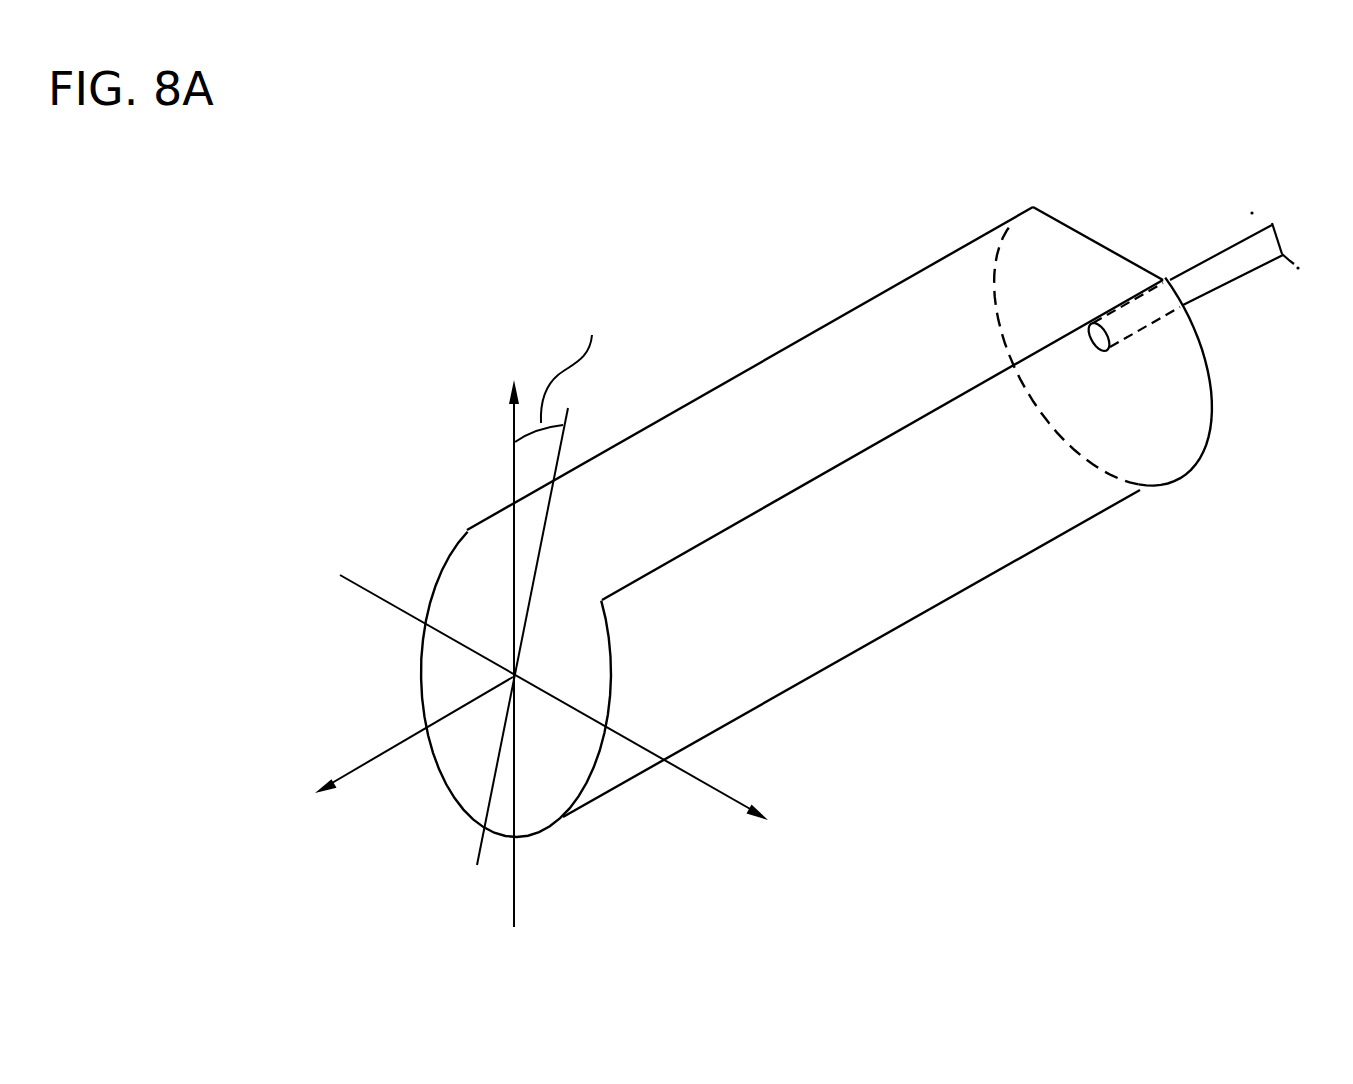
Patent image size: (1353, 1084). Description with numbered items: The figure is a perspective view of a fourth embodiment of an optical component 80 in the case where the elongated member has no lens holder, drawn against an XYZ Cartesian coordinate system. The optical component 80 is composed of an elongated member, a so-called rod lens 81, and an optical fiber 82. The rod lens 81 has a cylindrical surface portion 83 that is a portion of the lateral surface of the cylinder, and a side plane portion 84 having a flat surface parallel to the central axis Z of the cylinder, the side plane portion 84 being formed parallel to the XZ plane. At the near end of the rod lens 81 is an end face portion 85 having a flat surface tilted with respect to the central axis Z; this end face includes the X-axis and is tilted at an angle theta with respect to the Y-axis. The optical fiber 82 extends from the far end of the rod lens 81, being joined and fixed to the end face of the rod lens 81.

The optical component 80 is at (833, 484).
The rod lens 81 is at (442, 475).
The optical fiber 82 is at (1232, 263).
The cylindrical surface portion 83 is at (1007, 535).
The side plane portion 84 is at (797, 377).
The end face portion 85 is at (447, 680).